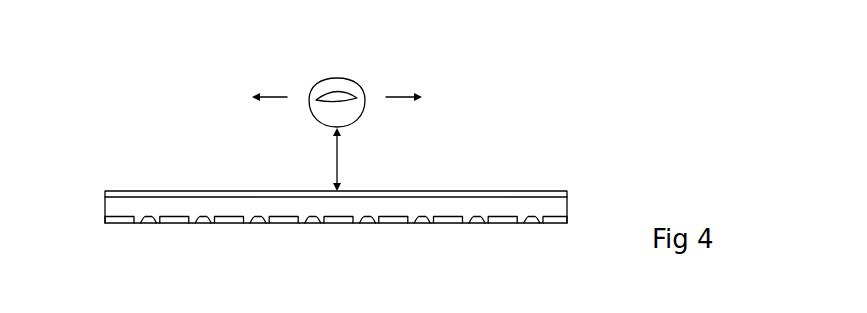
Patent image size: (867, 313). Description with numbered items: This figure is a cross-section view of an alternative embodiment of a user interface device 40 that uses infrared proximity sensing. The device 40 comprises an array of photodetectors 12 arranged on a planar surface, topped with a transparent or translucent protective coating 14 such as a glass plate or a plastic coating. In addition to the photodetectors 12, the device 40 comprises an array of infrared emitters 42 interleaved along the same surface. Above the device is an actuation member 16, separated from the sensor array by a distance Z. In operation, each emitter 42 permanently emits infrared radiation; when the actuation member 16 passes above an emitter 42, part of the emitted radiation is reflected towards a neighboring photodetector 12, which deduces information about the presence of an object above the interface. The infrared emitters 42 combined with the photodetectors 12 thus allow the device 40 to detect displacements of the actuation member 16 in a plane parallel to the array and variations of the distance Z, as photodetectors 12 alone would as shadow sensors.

The user interface device 40 is at (100, 181).
The protective coating 14 is at (552, 190).
The photodetectors 12 is at (177, 226).
The infrared emitters 42 is at (254, 217).
The actuation member 16 is at (363, 96).
The distance Z is at (338, 160).